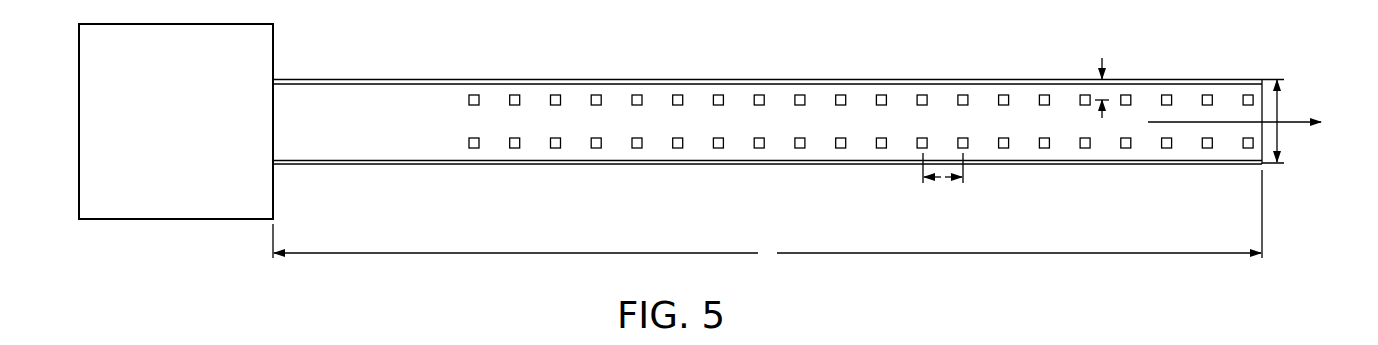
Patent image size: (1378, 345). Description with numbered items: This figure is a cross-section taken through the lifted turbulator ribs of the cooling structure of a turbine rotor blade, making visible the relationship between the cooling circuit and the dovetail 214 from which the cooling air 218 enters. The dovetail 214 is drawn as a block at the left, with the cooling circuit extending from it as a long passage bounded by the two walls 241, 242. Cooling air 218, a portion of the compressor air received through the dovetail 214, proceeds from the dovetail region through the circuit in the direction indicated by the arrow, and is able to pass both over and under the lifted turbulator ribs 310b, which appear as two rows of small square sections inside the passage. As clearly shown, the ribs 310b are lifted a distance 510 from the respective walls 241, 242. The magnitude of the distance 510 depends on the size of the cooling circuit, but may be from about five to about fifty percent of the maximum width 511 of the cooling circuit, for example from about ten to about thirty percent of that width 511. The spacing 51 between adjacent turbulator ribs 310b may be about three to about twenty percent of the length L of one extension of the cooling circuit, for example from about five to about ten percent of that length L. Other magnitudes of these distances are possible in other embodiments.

The dovetail 214 is at (173, 202).
The wall 241 is at (450, 78).
The wall 242 is at (452, 165).
The lifted turbulator ribs 310b is at (637, 95).
The spacing between turbulator ribs 51 is at (943, 180).
The distance 510 is at (1105, 86).
The width of the cooling circuit 511 is at (1279, 108).
The cooling air 218 is at (1298, 127).
The length of one extension of the cooling circuit L is at (767, 218).